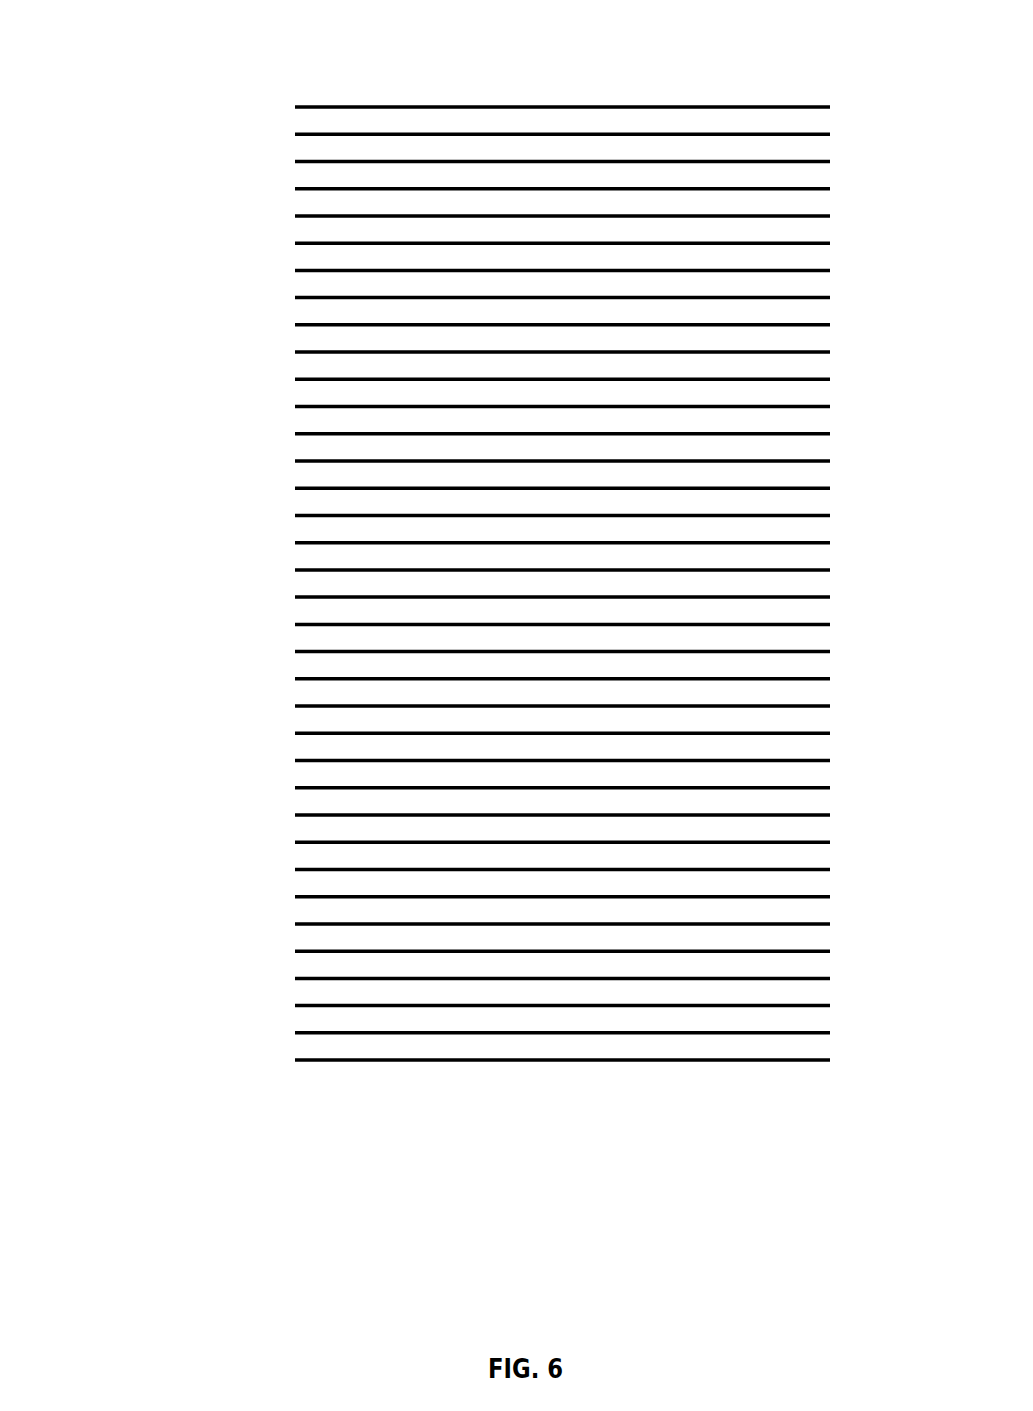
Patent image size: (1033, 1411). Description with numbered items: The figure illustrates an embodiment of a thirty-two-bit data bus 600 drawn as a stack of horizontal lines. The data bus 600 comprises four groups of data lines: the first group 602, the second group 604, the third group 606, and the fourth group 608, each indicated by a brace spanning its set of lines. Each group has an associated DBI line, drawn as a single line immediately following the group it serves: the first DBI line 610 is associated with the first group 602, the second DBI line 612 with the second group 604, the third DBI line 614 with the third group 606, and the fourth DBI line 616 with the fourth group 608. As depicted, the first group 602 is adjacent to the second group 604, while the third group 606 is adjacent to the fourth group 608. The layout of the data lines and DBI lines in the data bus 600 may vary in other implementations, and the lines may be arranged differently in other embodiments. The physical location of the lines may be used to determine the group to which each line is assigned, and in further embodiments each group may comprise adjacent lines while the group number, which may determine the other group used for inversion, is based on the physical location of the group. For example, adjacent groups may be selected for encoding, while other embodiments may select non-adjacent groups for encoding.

The 32-bit data bus 600 is at (769, 64).
The group 1 602 is at (298, 96).
The group 2 604 is at (288, 342).
The group 3 606 is at (290, 587).
The group 4 608 is at (285, 830).
The DBI1 610 is at (288, 325).
The DBI2 612 is at (288, 571).
The DBI3 614 is at (288, 815).
The DBI4 616 is at (288, 1060).